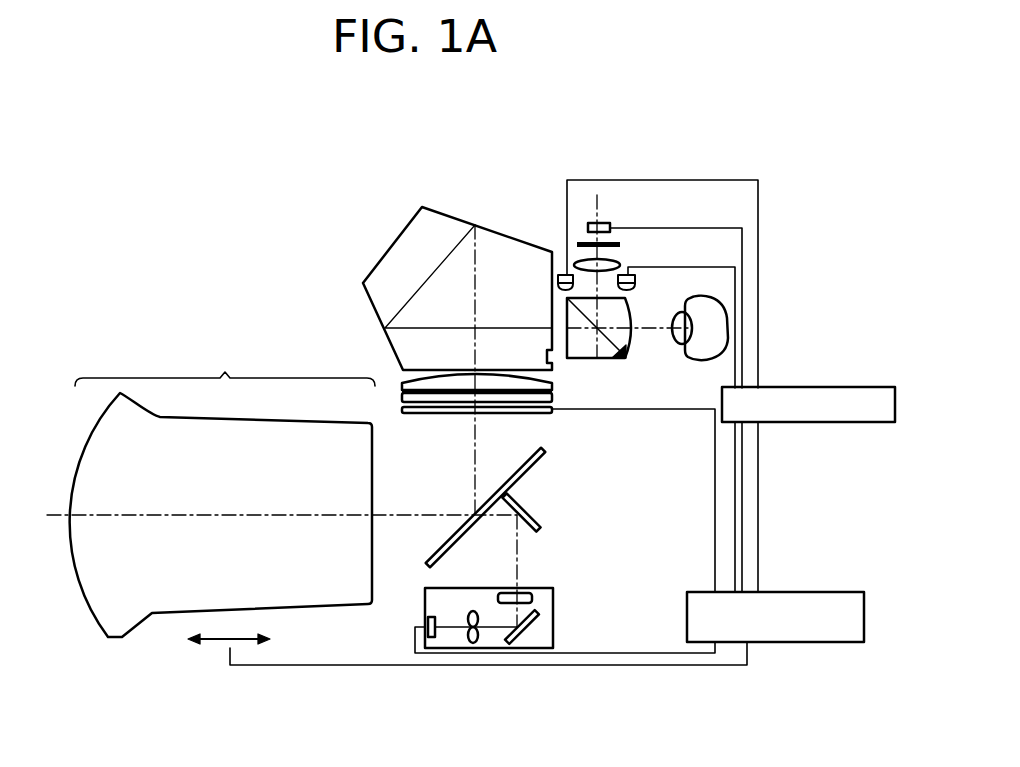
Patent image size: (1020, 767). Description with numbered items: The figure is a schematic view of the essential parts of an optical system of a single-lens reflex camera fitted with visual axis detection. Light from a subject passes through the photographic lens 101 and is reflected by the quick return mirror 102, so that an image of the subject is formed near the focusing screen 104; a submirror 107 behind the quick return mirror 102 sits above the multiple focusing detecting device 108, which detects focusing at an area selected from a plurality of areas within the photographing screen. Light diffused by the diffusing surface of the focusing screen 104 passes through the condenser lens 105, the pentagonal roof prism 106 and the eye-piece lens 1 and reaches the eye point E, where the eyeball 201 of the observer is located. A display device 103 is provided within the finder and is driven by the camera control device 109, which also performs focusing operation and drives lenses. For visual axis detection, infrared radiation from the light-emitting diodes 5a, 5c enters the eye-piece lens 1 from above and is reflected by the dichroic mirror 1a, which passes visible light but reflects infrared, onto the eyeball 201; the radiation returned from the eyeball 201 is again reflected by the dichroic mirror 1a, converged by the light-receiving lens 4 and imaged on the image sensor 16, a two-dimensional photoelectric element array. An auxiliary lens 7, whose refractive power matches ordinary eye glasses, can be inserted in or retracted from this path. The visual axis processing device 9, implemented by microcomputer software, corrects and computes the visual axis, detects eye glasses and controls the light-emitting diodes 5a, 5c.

The photographic lens 101 is at (222, 488).
The quick return (QR) mirror 102 is at (532, 468).
The display device 103 is at (557, 415).
The focusing screen 104 is at (402, 398).
The condenser lens 105 is at (402, 380).
The pentagonal roof prism 106 is at (393, 243).
The submirror 107 is at (540, 527).
The multiple focusing detecting device 108 is at (557, 612).
The camera control device 109 is at (785, 592).
The visual axis processing device 9 is at (795, 387).
The eye-piece lens 1 is at (635, 313).
The dichroic mirror 1a is at (620, 346).
The light-receiving lens 4 is at (617, 265).
The auxiliary lens 7 is at (582, 242).
The image sensor 16 is at (609, 223).
The light-emitting diode 5a is at (563, 275).
The light-emitting diode 5c is at (636, 278).
The eyeball 201 is at (728, 335).
The eye point E is at (666, 330).